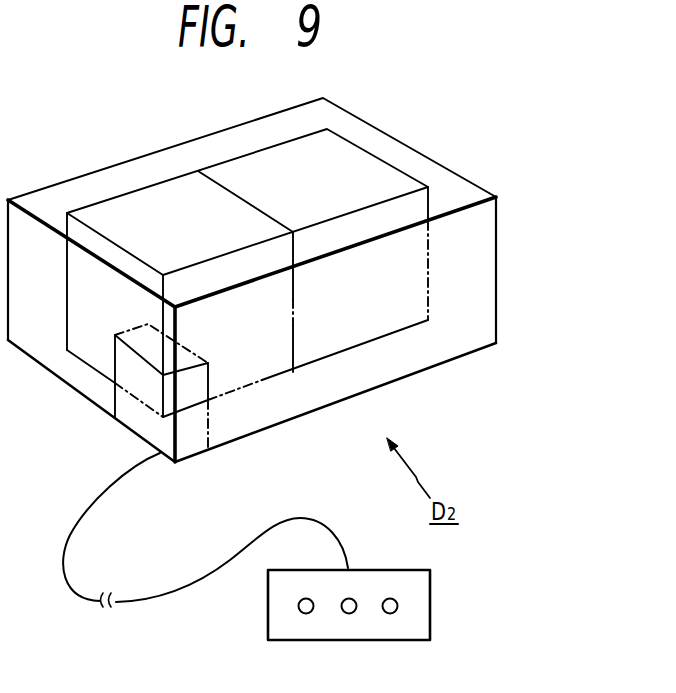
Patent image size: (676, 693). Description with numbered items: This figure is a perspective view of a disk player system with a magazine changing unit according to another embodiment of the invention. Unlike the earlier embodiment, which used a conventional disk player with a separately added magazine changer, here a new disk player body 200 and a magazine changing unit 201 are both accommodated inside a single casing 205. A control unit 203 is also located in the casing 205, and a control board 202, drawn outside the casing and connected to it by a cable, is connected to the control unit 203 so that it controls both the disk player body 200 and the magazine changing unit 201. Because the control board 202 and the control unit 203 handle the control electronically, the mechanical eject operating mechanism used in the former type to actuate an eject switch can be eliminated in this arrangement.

The disk player body 200 is at (379, 170).
The magazine changing unit 201 is at (262, 375).
The control board 202 is at (283, 546).
The control unit 203 is at (135, 399).
The casing 205 is at (290, 280).